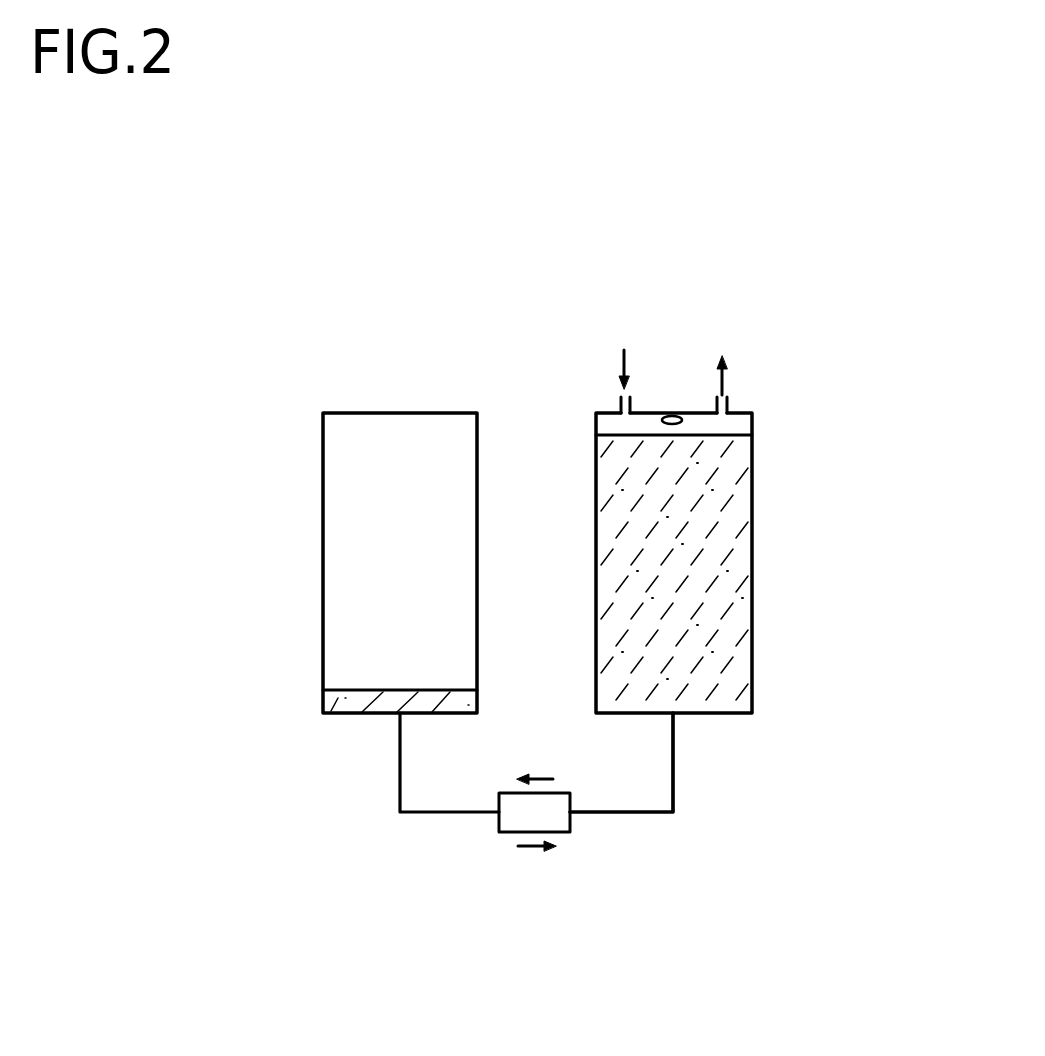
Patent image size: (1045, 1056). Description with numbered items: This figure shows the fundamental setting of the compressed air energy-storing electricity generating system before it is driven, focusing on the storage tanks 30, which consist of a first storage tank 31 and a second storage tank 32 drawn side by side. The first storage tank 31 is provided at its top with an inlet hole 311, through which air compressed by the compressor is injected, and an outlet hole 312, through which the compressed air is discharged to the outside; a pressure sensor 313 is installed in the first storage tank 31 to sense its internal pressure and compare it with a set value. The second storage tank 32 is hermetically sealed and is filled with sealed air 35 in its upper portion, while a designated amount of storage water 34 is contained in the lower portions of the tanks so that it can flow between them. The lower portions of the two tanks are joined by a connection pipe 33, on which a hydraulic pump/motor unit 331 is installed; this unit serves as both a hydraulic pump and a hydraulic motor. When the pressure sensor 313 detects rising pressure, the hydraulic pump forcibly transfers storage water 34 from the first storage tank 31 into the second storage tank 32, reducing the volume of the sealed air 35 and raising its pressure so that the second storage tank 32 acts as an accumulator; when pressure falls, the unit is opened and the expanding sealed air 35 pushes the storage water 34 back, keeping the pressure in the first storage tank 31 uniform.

The storage tanks 30 is at (390, 380).
The first storage tank 31 is at (752, 517).
The inlet hole 311 is at (620, 402).
The outlet hole 312 is at (727, 405).
The pressure sensor 313 is at (665, 412).
The second storage tank 32 is at (323, 487).
The connection pipe 33 is at (675, 769).
The hydraulic pump/motor unit 331 is at (558, 833).
The storage water 34 is at (732, 610).
The sealed air 35 is at (343, 592).